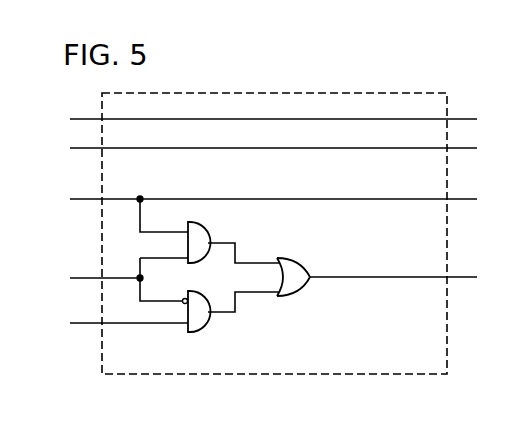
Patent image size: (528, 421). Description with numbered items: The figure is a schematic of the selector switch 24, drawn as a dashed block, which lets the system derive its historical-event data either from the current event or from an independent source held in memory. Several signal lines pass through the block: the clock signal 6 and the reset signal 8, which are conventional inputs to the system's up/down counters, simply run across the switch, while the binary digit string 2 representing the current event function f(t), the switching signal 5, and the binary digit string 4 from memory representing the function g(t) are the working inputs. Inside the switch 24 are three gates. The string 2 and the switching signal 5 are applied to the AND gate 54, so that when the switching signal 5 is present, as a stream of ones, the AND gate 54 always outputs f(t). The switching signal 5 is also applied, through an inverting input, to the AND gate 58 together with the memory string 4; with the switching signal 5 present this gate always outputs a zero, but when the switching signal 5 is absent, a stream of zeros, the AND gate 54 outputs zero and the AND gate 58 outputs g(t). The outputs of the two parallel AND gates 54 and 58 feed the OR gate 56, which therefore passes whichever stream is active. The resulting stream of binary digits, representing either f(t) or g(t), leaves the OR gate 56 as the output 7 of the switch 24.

The string of binary digits 2 is at (273, 226).
The string of binary digits 4 is at (167, 312).
The switching signal 5 is at (121, 279).
The clock signal 6 is at (273, 147).
The output of OR gate 7 is at (402, 277).
The reset signal 8 is at (273, 118).
The selector switch 24 is at (454, 318).
The AND gate 54 is at (203, 227).
The OR gate 56 is at (298, 260).
The AND gate 58 is at (204, 330).